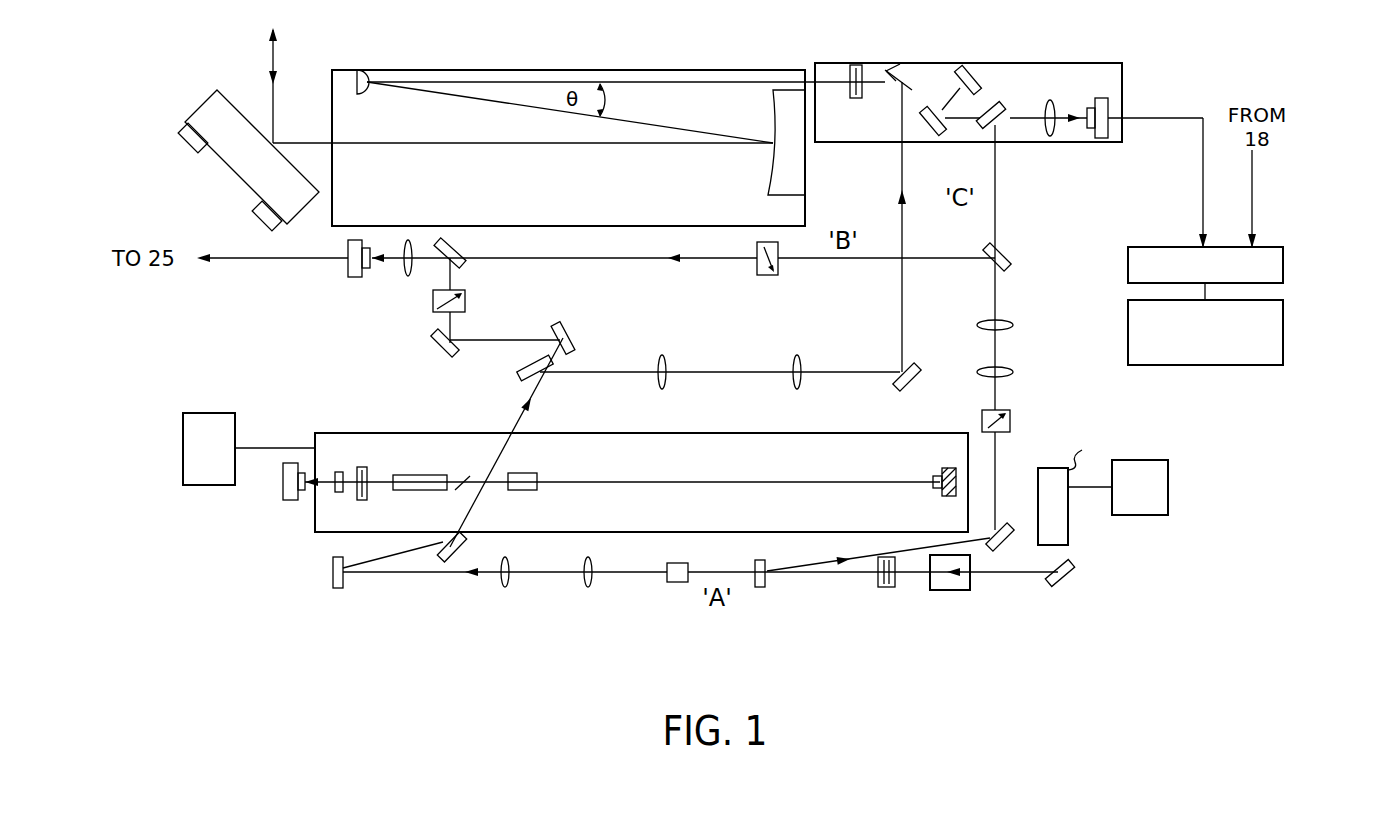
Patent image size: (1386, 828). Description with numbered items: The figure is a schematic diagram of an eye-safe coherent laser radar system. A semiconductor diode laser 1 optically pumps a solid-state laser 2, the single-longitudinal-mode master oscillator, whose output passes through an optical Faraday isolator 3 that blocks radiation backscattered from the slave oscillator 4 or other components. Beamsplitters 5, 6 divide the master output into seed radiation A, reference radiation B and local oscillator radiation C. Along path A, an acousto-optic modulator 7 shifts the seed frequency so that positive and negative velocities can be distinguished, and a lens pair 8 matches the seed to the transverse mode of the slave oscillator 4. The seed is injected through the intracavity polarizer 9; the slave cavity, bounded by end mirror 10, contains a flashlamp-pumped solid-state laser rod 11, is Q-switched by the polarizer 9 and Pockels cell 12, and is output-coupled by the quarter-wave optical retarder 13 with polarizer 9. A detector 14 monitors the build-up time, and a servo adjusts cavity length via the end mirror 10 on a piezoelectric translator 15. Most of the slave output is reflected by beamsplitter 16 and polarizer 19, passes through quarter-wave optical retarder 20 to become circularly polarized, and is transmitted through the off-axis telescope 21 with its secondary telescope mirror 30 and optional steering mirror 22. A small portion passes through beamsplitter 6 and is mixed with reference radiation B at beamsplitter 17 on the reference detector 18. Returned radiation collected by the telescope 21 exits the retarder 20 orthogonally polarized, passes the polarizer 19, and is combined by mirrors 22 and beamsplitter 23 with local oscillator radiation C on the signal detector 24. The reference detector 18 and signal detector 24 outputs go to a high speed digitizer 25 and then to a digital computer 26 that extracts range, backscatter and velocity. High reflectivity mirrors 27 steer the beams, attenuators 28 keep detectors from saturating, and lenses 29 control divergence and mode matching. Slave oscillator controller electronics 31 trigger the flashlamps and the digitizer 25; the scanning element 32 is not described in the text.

The semiconductor diode laser 1 is at (1130, 501).
The solid-state laser 2 is at (1043, 531).
The optical Faraday isolator 3 is at (940, 592).
The slave oscillator 4 is at (670, 514).
The beamsplitter 5 is at (765, 585).
The beamsplitter 6 is at (1010, 272).
The acousto-optic modulator 7 is at (676, 584).
The lens pair 8 is at (592, 588).
The intracavity polarizer 9 is at (478, 474).
The end mirror 10 is at (339, 493).
The solid-state laser rod 11 is at (420, 492).
The Pockels cell 12 is at (522, 492).
The intracavity quarter-wave optical retarder 13 is at (364, 466).
The detector 14 is at (283, 495).
The piezoelectric translator 15 is at (921, 497).
The beamsplitter 16 is at (520, 373).
The beamsplitter 17 is at (470, 247).
The reference detector 18 is at (348, 265).
The polarizer 19 is at (904, 68).
The quarter-wave optical retarder 20 is at (855, 63).
The off-axis telescope 21 is at (558, 219).
The steering mirror 22 is at (930, 105).
The beamsplitter 23 is at (1000, 103).
The signal detector 24 is at (1100, 140).
The digitizer 25 is at (1283, 262).
The digital computer 26 is at (1283, 350).
The high reflectivity mirrors 27 is at (440, 352).
The attenuators 28 is at (467, 300).
The lenses 29 is at (1050, 100).
The secondary telescope mirror 30 is at (372, 70).
The slave oscillator controller electronics 31 is at (192, 465).
The scanning mirror 32 is at (230, 162).